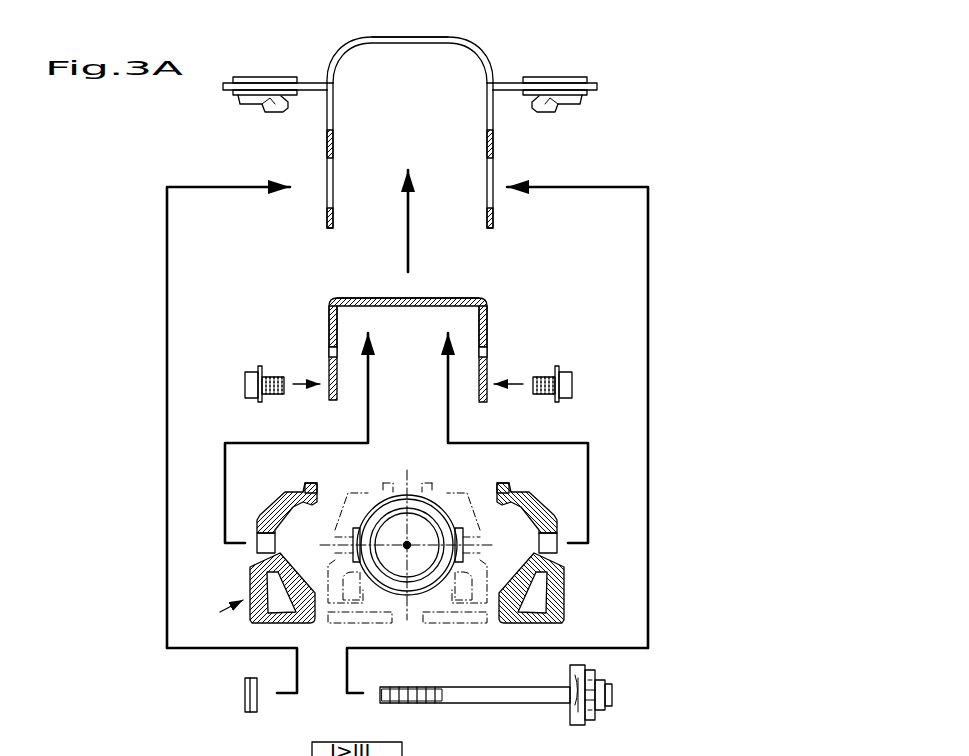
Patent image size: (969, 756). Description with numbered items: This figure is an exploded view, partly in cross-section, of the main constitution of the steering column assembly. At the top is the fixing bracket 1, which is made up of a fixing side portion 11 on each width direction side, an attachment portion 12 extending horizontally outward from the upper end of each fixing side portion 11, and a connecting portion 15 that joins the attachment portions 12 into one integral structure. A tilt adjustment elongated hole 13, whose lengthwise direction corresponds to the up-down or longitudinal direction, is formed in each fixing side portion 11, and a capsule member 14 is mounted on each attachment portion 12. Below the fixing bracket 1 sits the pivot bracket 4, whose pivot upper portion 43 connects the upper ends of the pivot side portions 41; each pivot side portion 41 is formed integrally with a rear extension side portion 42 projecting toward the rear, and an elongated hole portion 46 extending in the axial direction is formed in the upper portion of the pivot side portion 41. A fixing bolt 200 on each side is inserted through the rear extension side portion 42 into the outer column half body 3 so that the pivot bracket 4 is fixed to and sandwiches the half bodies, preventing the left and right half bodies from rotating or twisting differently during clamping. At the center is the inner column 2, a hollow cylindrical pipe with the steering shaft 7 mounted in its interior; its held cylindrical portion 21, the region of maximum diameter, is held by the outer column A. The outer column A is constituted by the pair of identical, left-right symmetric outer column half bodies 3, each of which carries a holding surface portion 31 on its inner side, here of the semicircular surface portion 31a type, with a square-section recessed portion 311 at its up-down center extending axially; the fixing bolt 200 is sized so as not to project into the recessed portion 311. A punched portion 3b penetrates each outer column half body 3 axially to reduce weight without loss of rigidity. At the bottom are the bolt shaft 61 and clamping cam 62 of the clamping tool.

The fixing bracket 1 is at (410, 118).
The fixing side portion 11 is at (327, 140).
The attachment portion 12 is at (311, 83).
The tilt adjustment elongated hole 13 is at (327, 199).
The capsule member 14 is at (272, 77).
The connecting portion 15 is at (507, 47).
The inner column 2 is at (407, 541).
The held cylindrical portion 21 is at (448, 512).
The fixing bolt 200 is at (252, 398).
The outer column half body 3 is at (405, 538).
The holding surface portion 31 is at (306, 493).
The semicircular surface portion 31a is at (325, 505).
The recessed portion 311 is at (278, 556).
The punched portion 3b is at (275, 592).
The pivot bracket 4 is at (424, 328).
The pivot side portion 41 is at (424, 332).
The rear extension side portion 42 is at (330, 314).
The pivot upper portion 43 is at (438, 298).
The elongated hole portion 46 is at (328, 346).
The bolt shaft 61 is at (497, 700).
The clamping cam 62 is at (577, 725).
The steering shaft 7 is at (390, 512).
The outer column A is at (214, 620).